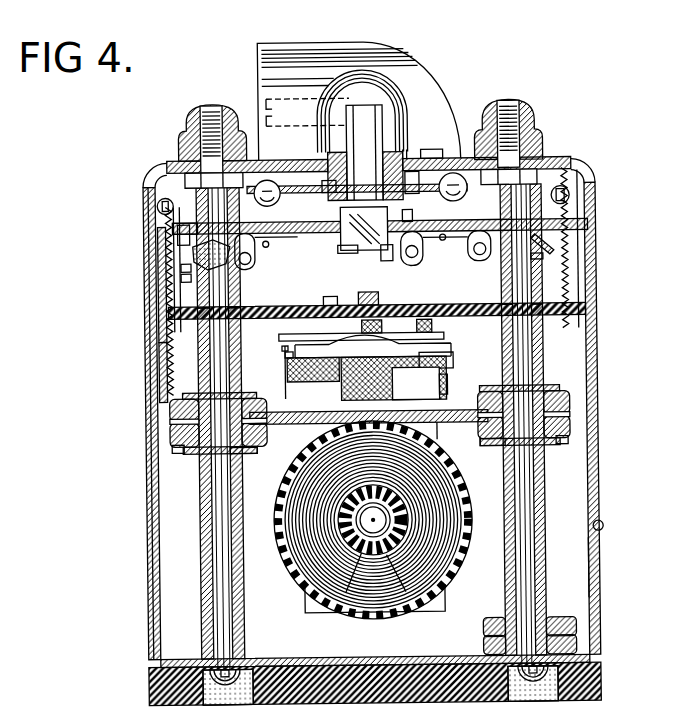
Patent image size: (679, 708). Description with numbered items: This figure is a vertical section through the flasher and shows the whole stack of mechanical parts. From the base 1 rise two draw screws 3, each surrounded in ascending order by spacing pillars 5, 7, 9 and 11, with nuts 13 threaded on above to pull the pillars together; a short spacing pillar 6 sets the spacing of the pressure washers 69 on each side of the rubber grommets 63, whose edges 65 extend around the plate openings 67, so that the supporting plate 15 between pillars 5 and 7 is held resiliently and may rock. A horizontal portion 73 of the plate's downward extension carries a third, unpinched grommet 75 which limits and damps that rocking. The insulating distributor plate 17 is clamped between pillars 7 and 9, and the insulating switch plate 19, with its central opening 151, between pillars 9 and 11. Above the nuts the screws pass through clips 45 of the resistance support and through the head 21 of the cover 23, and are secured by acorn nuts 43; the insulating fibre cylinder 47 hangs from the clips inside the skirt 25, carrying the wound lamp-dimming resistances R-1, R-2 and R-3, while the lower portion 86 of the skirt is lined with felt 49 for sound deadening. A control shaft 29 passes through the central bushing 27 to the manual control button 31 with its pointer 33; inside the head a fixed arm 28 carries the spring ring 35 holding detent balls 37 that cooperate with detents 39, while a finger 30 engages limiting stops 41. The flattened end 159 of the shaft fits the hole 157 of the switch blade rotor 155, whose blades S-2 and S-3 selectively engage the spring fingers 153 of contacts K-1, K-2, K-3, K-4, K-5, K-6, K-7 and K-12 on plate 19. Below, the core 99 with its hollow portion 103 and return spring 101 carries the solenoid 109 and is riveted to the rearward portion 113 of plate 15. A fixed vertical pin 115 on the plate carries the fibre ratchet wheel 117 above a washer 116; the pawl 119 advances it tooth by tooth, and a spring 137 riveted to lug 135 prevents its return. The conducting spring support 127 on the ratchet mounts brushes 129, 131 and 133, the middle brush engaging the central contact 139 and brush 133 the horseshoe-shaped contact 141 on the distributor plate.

The base 1 is at (362, 658).
The draw screws 3 is at (216, 583).
The lower spacing pillars 5 is at (204, 547).
The spacing pillar 6 is at (242, 452).
The middle spacing pillars 7 is at (202, 370).
The upper spacing pillars 9 is at (166, 292).
The uppermost spacing pillars 11 is at (160, 203).
The nuts 13 is at (177, 164).
The plate 15 is at (269, 424).
The insulating distributor plate 17 is at (166, 330).
The insulating switch plate 19 is at (177, 226).
The head 21 is at (301, 156).
The cover 23 is at (631, 160).
The skirt 25 is at (150, 515).
The central bushing 27 is at (346, 115).
The fixed arm 28 is at (318, 193).
The control shaft 29 is at (367, 150).
The finger 30 is at (408, 150).
The manual control button 31 is at (316, 66).
The pointer 33 is at (441, 150).
The spring ring 35 is at (317, 183).
The detent balls 37 is at (291, 150).
The detents 39 is at (271, 179).
The limiting stops 41 is at (414, 172).
The acorn nuts 43 is at (192, 114).
The clips 45 is at (153, 168).
The insulating fibre cylinder 47 is at (166, 348).
The felt lining 49 is at (603, 527).
The rubber grommets 63 is at (172, 447).
The grommet edges 65 is at (170, 408).
The plate openings 67 is at (170, 420).
The pressure washers 69 is at (562, 449).
The horizontal portion 73 is at (576, 640).
The third grommet 75 is at (562, 623).
The lower portion of skirt 86 is at (600, 562).
The core 99 is at (425, 612).
The spring 101 is at (406, 512).
The hollow portion 103 is at (352, 606).
The solenoid 109 is at (302, 575).
The rearward portion 113 is at (440, 432).
The fixed vertical pin 115 is at (350, 392).
The washer 116 is at (415, 383).
The ratchet wheel 117 is at (455, 360).
The pawl 119 is at (285, 385).
The conducting spring support 127 is at (309, 382).
The outermost brush 129 is at (286, 355).
The middle brush 131 is at (361, 328).
The brush 133 is at (434, 326).
The lug 135 is at (449, 386).
The spring 137 is at (415, 347).
The central contact 139 is at (370, 288).
The horseshoe-shaped contact 141 is at (330, 298).
The central opening 151 is at (492, 221).
The spring fingers 153 is at (271, 245).
The switch blade rotor 155 is at (390, 259).
The hole 157 is at (364, 250).
The flattened end 159 is at (416, 220).
The contact K-1 is at (546, 264).
The contact K-2 is at (478, 255).
The contact K-3 is at (409, 255).
The contact K-4 is at (346, 253).
The contact K-5 is at (255, 262).
The contact K-6 is at (190, 276).
The contact K-7 is at (192, 252).
The contact K-12 is at (556, 250).
The lamp-dimming resistance R-1 is at (80, 250).
The lamp-dimming resistance R-2 is at (182, 263).
The lamp-dimming resistance R-3 is at (80, 250).
The switch blade S-2 is at (262, 270).
The switch blade S-3 is at (445, 253).